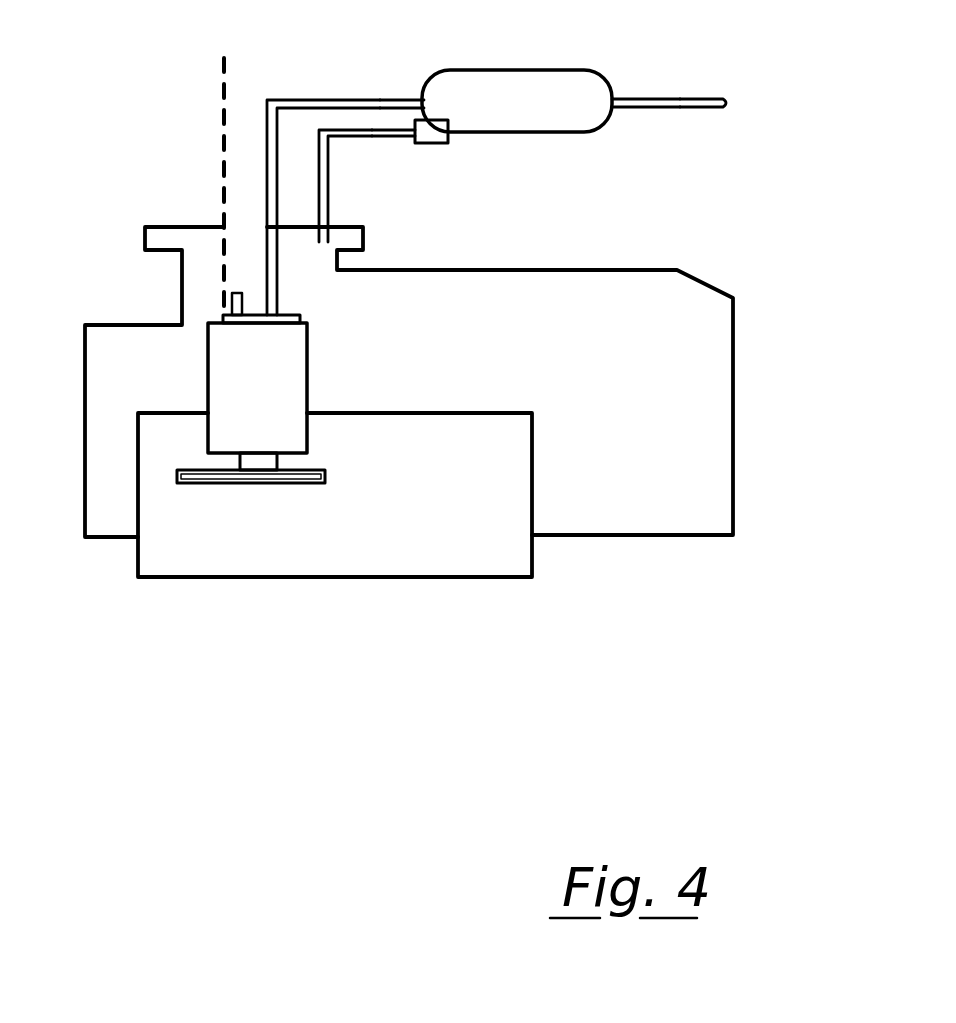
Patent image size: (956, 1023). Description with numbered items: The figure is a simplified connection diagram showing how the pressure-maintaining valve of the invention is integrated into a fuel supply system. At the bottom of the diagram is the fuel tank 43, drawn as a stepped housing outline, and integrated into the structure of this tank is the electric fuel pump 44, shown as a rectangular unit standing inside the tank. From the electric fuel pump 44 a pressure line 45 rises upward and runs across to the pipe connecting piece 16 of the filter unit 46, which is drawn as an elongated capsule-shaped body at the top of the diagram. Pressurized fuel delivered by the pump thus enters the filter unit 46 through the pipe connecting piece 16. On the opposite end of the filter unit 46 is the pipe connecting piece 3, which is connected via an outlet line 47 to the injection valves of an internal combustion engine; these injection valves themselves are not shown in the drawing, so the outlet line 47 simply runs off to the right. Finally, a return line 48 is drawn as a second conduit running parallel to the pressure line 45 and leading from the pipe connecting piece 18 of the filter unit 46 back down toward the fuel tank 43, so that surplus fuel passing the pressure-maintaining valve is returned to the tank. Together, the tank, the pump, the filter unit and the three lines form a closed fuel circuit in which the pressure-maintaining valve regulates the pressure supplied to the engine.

The pipe connecting piece 3 is at (653, 97).
The pipe connecting piece 16 is at (380, 98).
The pipe connecting piece 18 is at (372, 137).
The fuel tank 43 is at (737, 338).
The electric fuel pump 44 is at (308, 370).
The pressure line 45 is at (310, 100).
The filter unit 46 is at (583, 133).
The outlet line 47 is at (730, 100).
The return line 48 is at (352, 131).